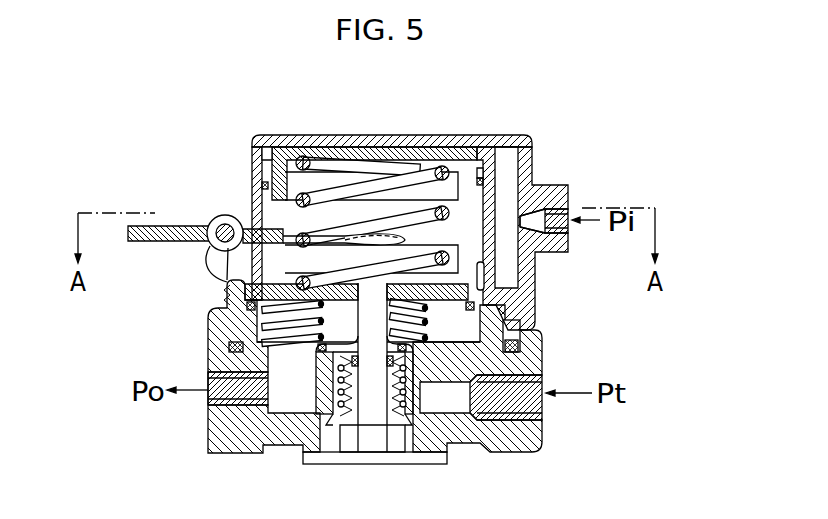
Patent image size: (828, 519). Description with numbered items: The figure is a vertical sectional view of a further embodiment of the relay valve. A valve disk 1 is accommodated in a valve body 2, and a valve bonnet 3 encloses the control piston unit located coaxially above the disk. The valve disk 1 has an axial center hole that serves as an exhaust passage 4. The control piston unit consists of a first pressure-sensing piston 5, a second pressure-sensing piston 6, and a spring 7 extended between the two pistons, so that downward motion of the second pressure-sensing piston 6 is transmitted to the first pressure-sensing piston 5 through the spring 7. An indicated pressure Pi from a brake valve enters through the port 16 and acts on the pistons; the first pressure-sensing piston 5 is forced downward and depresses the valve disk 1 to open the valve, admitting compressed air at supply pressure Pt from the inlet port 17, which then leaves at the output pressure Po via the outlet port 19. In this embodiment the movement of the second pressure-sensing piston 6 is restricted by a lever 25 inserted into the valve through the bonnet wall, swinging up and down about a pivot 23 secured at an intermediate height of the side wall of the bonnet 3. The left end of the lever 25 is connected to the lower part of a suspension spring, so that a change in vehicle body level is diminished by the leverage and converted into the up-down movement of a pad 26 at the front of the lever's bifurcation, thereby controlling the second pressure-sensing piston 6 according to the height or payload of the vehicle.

The valve disk 1 is at (358, 433).
The valve body 2 is at (518, 443).
The valve bonnet 3 is at (525, 140).
The exhaust passage 4 is at (378, 430).
The first pressure-sensing piston 5 is at (486, 268).
The second pressure-sensing piston 6 is at (415, 150).
The spring 7 is at (275, 168).
The port 16 is at (572, 207).
The inlet port 17 is at (545, 382).
The outlet port 19 is at (212, 396).
The pivot 23 is at (214, 246).
The lever 25 is at (148, 243).
The pad 26 is at (386, 238).